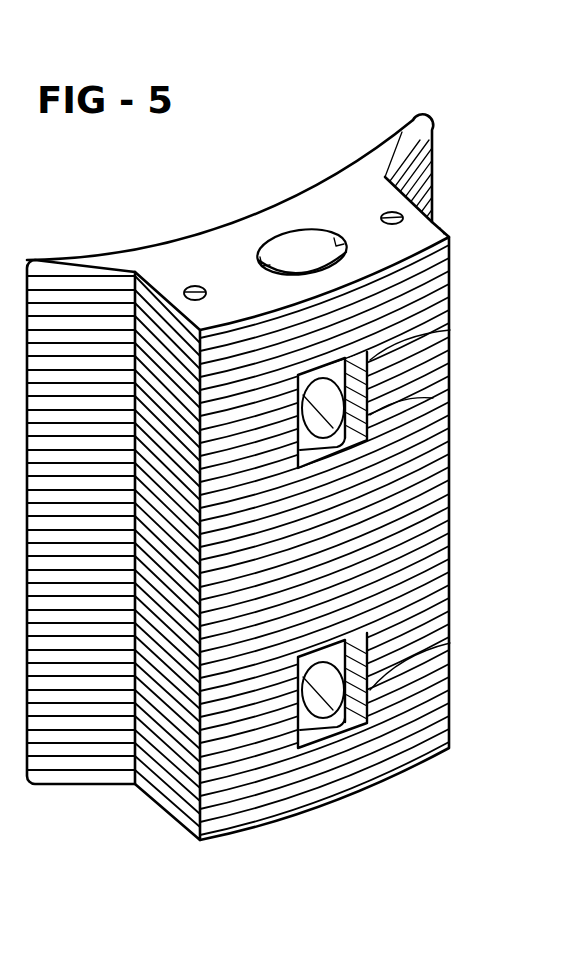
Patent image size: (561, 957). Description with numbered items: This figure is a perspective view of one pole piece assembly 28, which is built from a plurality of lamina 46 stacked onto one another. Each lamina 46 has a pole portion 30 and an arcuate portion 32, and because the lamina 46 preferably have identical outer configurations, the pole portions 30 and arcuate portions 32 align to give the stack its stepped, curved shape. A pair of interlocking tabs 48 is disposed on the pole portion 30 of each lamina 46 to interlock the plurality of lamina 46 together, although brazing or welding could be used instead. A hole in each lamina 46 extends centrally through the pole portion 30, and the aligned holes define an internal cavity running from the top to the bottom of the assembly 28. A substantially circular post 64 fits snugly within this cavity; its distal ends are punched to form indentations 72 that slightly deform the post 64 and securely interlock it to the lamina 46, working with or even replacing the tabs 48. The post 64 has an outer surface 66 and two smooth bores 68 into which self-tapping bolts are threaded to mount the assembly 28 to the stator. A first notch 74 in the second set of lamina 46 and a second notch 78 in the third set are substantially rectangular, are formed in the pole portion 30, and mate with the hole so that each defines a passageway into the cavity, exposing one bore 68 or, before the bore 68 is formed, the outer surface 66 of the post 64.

The pole piece assembly 28 is at (305, 131).
The pole portion 30 is at (448, 232).
The arcuate portion 32 is at (70, 262).
The lamina 46 is at (442, 423).
The interlocking tab 48 is at (194, 284).
The post 64 is at (288, 240).
The outer surface 66 is at (453, 330).
The bore 68 is at (323, 690).
The indentation 72 is at (262, 262).
The first notch 74 is at (433, 398).
The second notch 78 is at (450, 643).